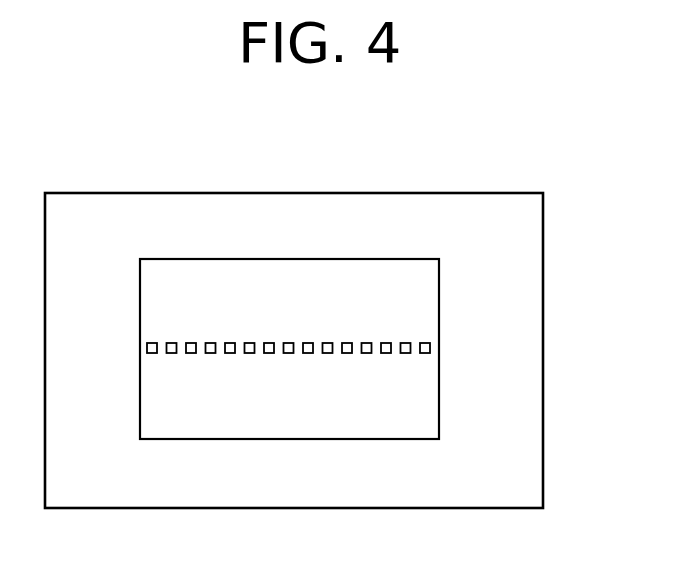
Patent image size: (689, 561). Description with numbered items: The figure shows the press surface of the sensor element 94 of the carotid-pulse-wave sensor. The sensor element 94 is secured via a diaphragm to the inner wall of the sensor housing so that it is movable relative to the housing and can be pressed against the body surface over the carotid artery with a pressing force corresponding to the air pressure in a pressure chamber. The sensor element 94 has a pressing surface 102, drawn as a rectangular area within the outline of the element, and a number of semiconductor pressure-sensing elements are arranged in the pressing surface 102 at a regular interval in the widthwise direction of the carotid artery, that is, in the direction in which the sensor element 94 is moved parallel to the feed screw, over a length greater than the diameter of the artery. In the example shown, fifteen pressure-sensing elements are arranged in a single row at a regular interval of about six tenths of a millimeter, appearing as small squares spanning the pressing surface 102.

The sensor element 94 is at (344, 184).
The pressing surface 102 is at (333, 270).